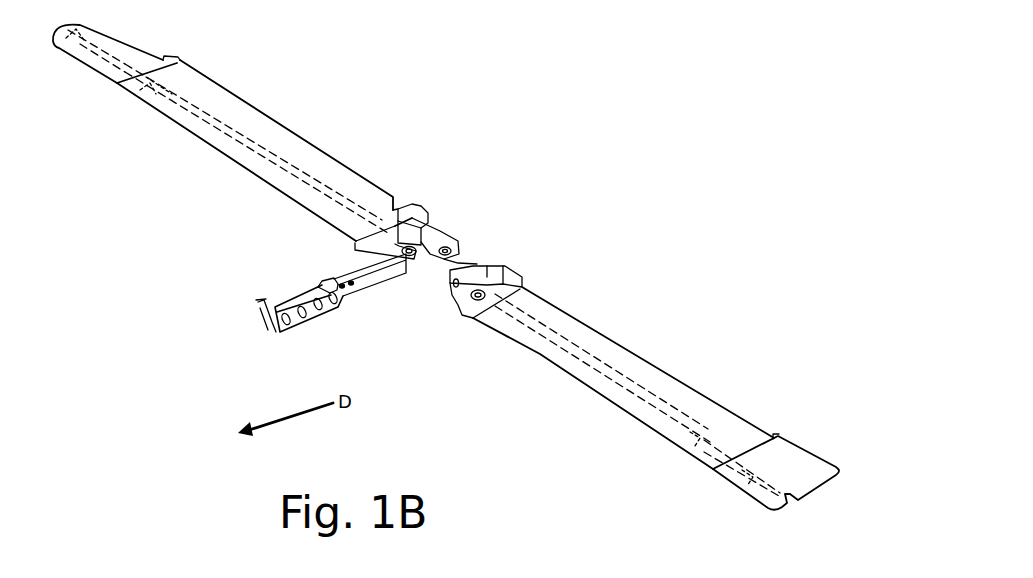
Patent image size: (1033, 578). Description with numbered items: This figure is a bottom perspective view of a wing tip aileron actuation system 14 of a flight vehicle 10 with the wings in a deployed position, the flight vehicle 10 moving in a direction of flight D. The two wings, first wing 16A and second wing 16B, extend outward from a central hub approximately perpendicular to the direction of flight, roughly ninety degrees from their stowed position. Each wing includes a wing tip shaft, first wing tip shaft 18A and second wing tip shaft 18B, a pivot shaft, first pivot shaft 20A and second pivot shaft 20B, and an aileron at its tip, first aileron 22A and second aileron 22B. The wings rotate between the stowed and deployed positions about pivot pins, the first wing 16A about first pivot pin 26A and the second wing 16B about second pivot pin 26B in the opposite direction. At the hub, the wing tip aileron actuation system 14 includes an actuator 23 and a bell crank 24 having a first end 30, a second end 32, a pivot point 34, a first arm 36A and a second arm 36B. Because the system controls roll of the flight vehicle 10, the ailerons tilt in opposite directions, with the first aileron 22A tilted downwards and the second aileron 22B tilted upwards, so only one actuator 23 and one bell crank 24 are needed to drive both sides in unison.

The flight vehicle 10 is at (596, 184).
The wing tip aileron actuation system 14 is at (245, 323).
The first wing 16A is at (373, 193).
The second wing 16B is at (596, 383).
The first wing tip shaft 18A is at (310, 176).
The second wing tip shaft 18B is at (632, 388).
The first pivot shaft 20A is at (170, 88).
The second pivot shaft 20B is at (724, 458).
The first aileron 22A is at (90, 60).
The second aileron 22B is at (735, 482).
The actuator 23 is at (319, 310).
The bell crank 24 is at (402, 287).
The first pivot pin 26A is at (411, 257).
The second pivot pin 26B is at (478, 300).
The first end 30 is at (327, 280).
The second end 32 is at (457, 247).
The pivot point 34 is at (453, 243).
The first arm 36A is at (428, 224).
The second arm 36B is at (476, 263).